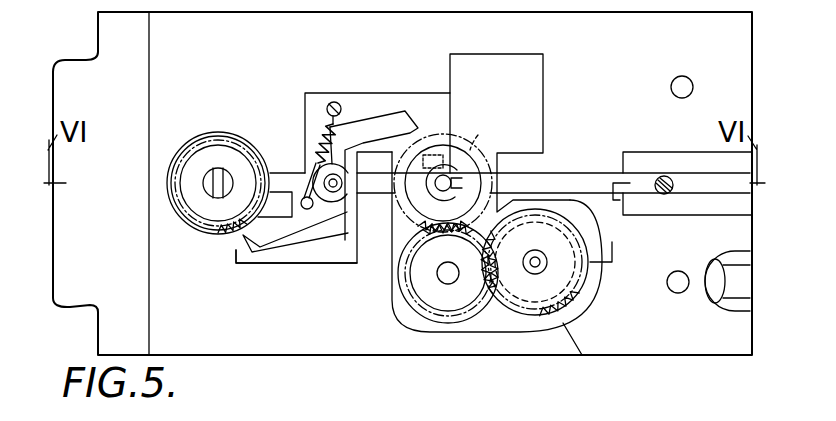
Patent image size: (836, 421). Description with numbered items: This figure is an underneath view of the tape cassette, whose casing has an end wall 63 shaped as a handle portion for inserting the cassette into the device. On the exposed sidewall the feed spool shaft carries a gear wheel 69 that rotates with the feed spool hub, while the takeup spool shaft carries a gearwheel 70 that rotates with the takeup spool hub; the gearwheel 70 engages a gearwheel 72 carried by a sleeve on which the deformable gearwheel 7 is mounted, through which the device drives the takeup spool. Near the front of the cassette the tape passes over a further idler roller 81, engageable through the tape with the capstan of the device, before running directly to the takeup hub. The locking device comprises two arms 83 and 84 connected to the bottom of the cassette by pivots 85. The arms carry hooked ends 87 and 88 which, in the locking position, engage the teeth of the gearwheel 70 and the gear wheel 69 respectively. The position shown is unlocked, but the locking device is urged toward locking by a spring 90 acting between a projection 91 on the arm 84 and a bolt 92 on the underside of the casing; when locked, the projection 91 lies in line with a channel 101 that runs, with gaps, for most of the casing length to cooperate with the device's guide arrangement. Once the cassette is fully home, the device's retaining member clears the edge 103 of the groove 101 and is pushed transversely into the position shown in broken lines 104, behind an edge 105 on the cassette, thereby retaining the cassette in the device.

The end wall 63 is at (70, 78).
The channel 101 is at (565, 178).
The arm 83 is at (358, 128).
The gear wheel 69 is at (205, 205).
The hooked end 88 is at (243, 240).
The arm 84 is at (293, 237).
The bolt 92 is at (327, 105).
The pivots 85 is at (327, 180).
The hooked end 87 is at (405, 112).
The spring 90 is at (327, 176).
The projection 91 is at (309, 209).
The gearwheel 70 is at (420, 195).
The broken-line position 104 is at (443, 130).
The edge 105 is at (440, 155).
The edge 103 is at (450, 173).
The gearwheel 72 is at (430, 290).
The deformable gearwheel 7 is at (560, 270).
The idler roller 81 is at (712, 288).